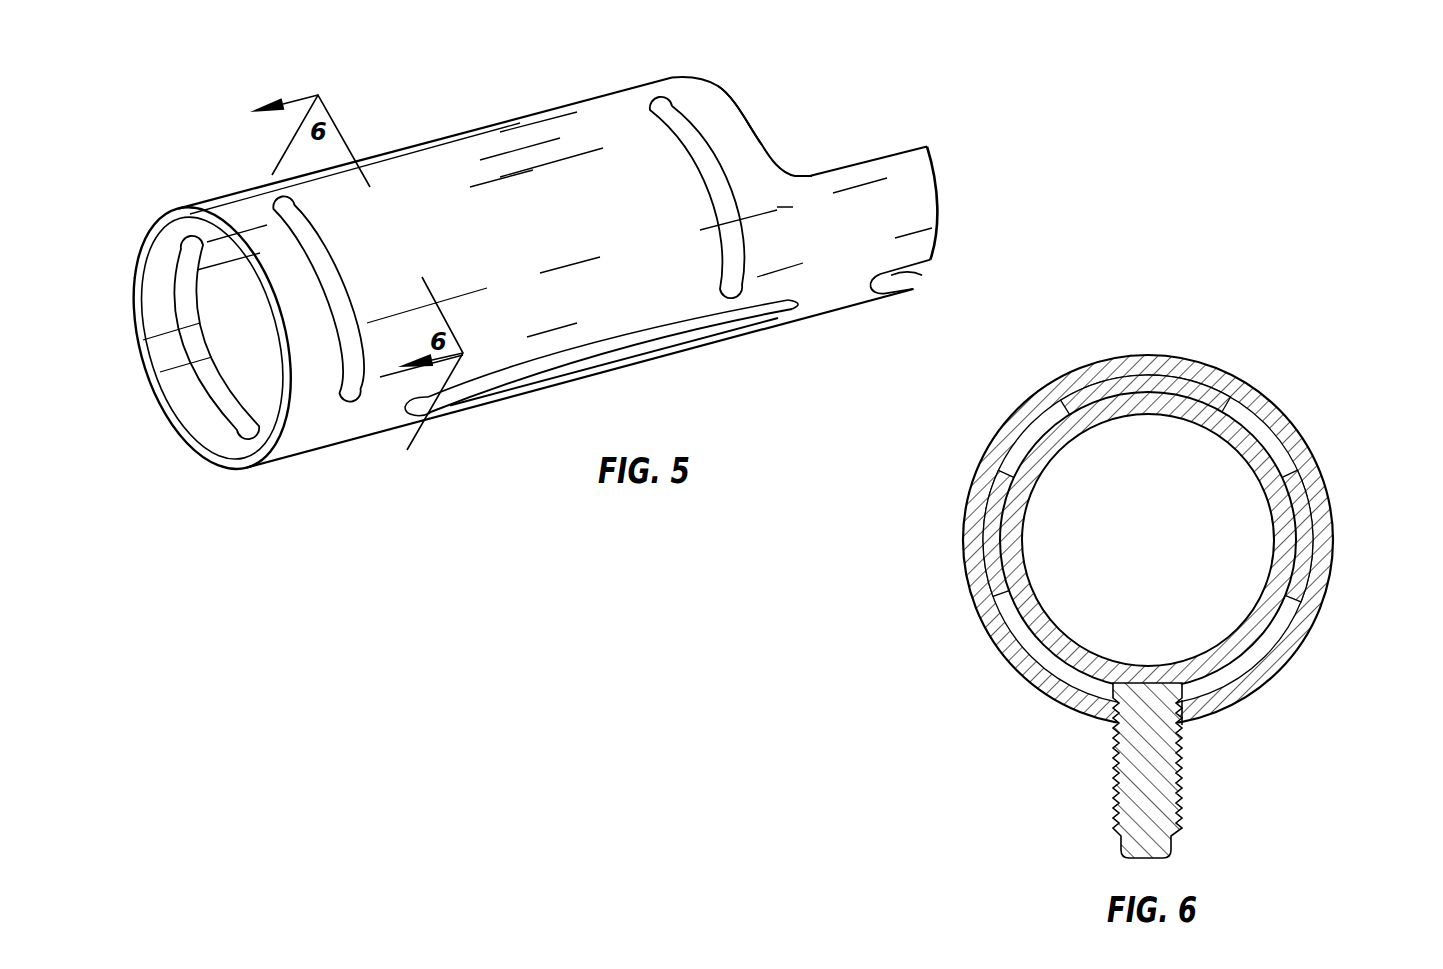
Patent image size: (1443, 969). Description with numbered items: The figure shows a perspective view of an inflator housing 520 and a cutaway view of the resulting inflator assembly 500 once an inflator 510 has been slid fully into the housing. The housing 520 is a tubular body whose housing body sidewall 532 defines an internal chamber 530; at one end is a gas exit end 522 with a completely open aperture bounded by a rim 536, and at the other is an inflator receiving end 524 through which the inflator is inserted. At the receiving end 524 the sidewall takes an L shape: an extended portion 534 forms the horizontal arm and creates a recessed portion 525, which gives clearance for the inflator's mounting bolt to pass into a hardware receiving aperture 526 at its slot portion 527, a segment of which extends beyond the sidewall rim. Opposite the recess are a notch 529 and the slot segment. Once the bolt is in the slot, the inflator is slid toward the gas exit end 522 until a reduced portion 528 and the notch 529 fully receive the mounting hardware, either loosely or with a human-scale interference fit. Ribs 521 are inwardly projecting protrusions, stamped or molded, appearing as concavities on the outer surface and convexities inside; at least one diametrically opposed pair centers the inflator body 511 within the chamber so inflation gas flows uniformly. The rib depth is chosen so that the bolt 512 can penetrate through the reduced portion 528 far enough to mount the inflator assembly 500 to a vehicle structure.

In FIG. 6, the inflator assembly 500 is at (1136, 557).
In FIG. 6, the inflator 510 is at (1205, 398).
In FIG. 6, the inflator body 511 is at (1306, 500).
In FIG. 6, the bolt 512 is at (1122, 745).
In FIG. 5, the inflator housing 520 is at (437, 123).
In FIG. 6, the inflator housing 520 is at (1292, 408).
In FIG. 5, the ribs 521 is at (268, 198).
In FIG. 6, the ribs 521 is at (996, 548).
In FIG. 5, the gas exit end 522 is at (172, 398).
In FIG. 5, the inflator receiving end 524 is at (943, 208).
In FIG. 5, the recessed portion 525 is at (802, 174).
In FIG. 5, the hardware receiving aperture 526 is at (645, 338).
In FIG. 5, the slot portion 527 is at (782, 318).
In FIG. 5, the reduced portion 528 is at (455, 403).
In FIG. 6, the reduced portion 528 is at (1203, 710).
In FIG. 5, the notch 529 is at (905, 295).
In FIG. 5, the chamber 530 is at (187, 433).
In FIG. 5, the housing body sidewall 532 is at (597, 128).
In FIG. 5, the extended portion 534 is at (943, 177).
In FIG. 5, the rim 536 is at (183, 208).
In FIG. 6, the rim 536 is at (1120, 357).